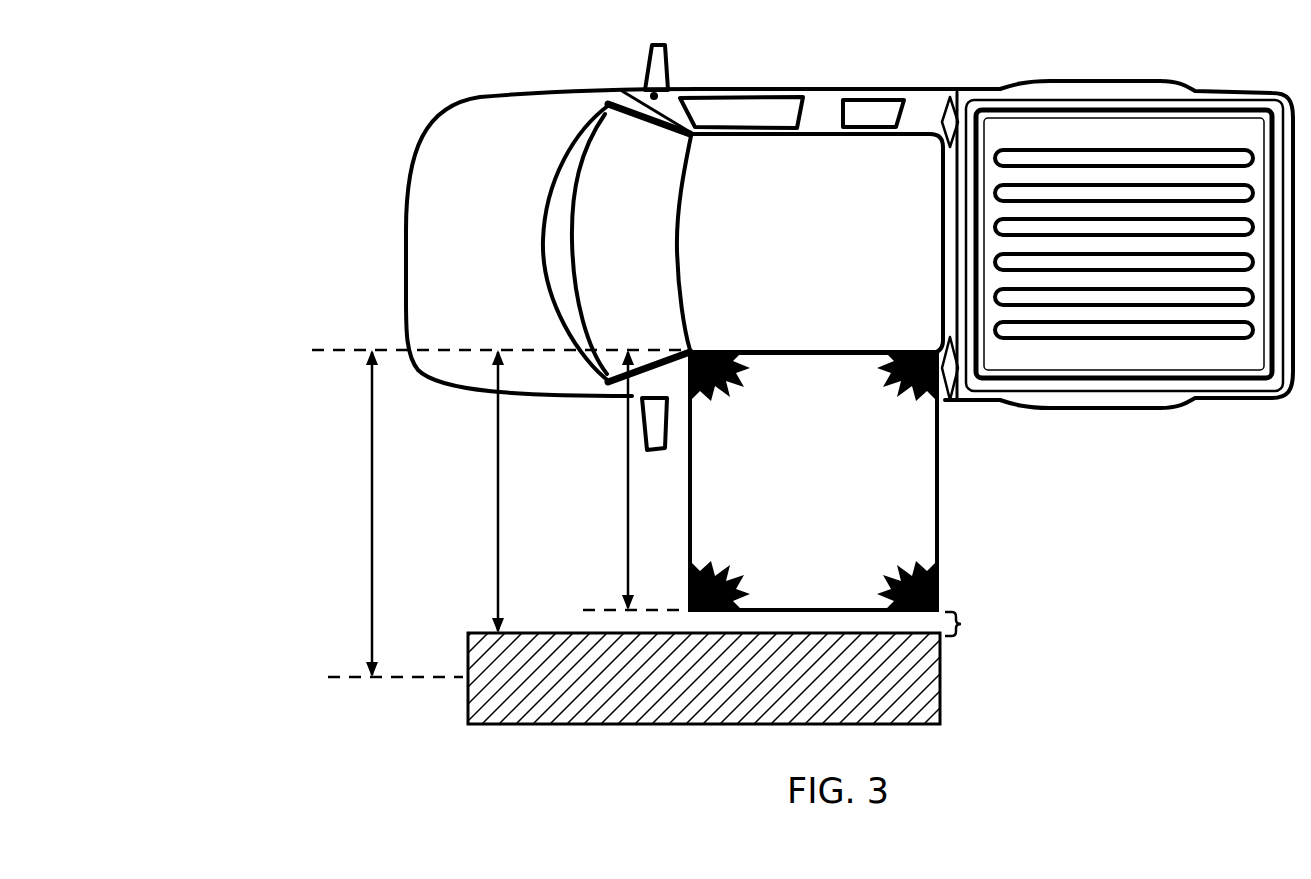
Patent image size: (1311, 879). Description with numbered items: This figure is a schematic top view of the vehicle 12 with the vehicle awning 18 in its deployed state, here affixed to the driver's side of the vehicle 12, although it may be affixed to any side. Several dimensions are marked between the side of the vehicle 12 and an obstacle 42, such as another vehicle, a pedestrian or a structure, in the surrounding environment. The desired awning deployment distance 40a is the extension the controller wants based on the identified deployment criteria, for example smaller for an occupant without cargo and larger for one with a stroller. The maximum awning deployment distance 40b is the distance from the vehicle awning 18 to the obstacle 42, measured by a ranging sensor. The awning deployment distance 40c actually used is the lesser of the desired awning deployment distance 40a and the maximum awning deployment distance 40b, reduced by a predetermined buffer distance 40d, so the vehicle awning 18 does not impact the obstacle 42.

The vehicle 12 is at (831, 260).
The vehicle awning 18 is at (832, 493).
The desired awning deployment distance 40a is at (371, 470).
The maximum awning deployment distance 40b is at (497, 470).
The awning deployment distance 40c is at (627, 470).
The predetermined buffer distance 40d is at (961, 624).
The obstacle 42 is at (940, 658).